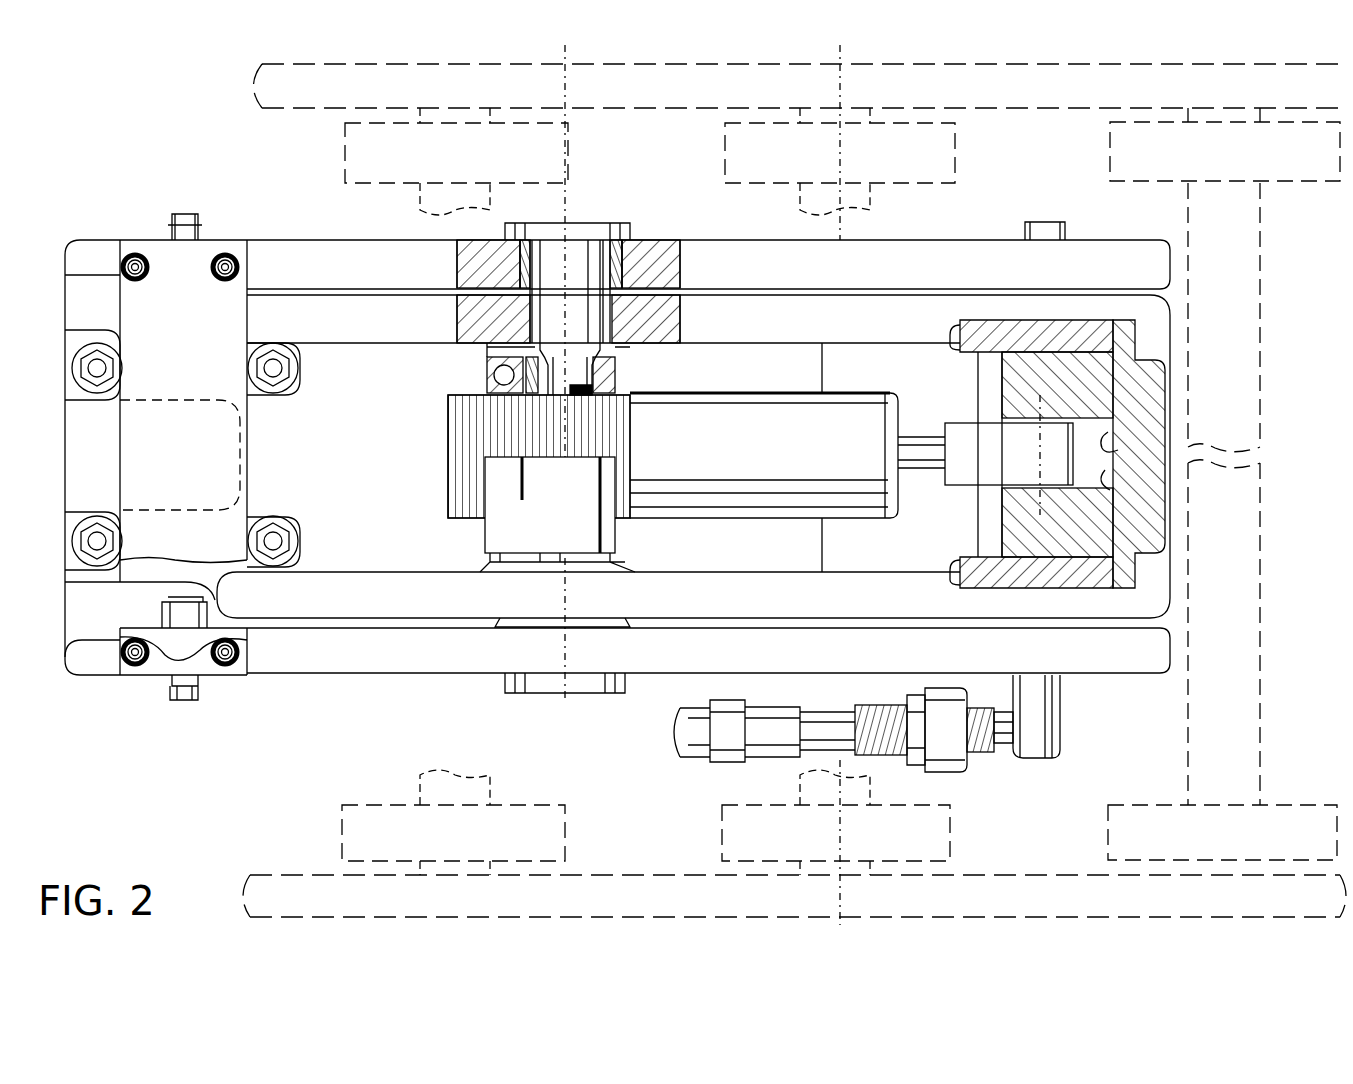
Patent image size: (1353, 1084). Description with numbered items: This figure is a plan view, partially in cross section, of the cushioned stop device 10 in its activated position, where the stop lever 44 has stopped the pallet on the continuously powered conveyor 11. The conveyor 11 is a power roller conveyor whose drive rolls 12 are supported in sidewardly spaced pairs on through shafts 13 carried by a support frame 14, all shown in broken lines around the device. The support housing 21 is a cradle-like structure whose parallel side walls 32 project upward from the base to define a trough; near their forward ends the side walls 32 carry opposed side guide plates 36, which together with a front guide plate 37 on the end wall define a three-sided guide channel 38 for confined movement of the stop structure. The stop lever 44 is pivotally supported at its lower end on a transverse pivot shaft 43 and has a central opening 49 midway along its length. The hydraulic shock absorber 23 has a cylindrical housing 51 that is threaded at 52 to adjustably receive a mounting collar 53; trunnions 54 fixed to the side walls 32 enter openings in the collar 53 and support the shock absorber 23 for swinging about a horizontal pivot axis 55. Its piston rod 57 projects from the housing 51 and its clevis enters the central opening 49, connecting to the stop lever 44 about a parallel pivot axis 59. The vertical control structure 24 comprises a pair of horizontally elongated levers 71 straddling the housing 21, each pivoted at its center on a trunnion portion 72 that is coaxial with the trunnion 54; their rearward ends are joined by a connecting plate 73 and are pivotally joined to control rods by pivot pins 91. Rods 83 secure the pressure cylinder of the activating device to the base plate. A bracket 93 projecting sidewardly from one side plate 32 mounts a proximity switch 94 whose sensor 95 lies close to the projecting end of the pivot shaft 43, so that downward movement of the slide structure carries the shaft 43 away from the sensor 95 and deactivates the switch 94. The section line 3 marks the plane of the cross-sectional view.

The section line 3- 3 is at (1117, 228).
The cushioned stop device 10 is at (172, 195).
The continuously powered conveyor 11 is at (290, 125).
The drive rolls 12 is at (535, 155).
The through shafts 13 is at (492, 198).
The support frame 14 is at (683, 100).
The support housing 21 is at (350, 290).
The hydraulic shock absorber 23 is at (750, 390).
The vertical control structure 24 is at (295, 680).
The side walls 32 is at (790, 305).
The side guide plates 36 is at (1100, 328).
The front guide plate 37 is at (1125, 445).
The guide channel 38 is at (1115, 415).
The pivot shaft 43 is at (1040, 718).
The stop lever 44 is at (1100, 520).
The central opening 49 is at (1090, 480).
The cylindrical housing 51 is at (792, 465).
The threads 52 is at (488, 433).
The mounting collar 53 is at (585, 490).
The trunnions 54 is at (602, 372).
The pivot axis 55 is at (570, 223).
The piston rod 57 is at (918, 448).
The pivot axis 59 is at (1040, 455).
The levers 71 is at (728, 255).
The trunnion portion 72 is at (590, 272).
The connecting plate 73 is at (130, 305).
The rods 83 is at (97, 368).
The pivot pins 91 is at (180, 700).
The bracket 93 is at (940, 745).
The proximity switch 94 is at (770, 740).
The sensor 95 is at (1005, 728).